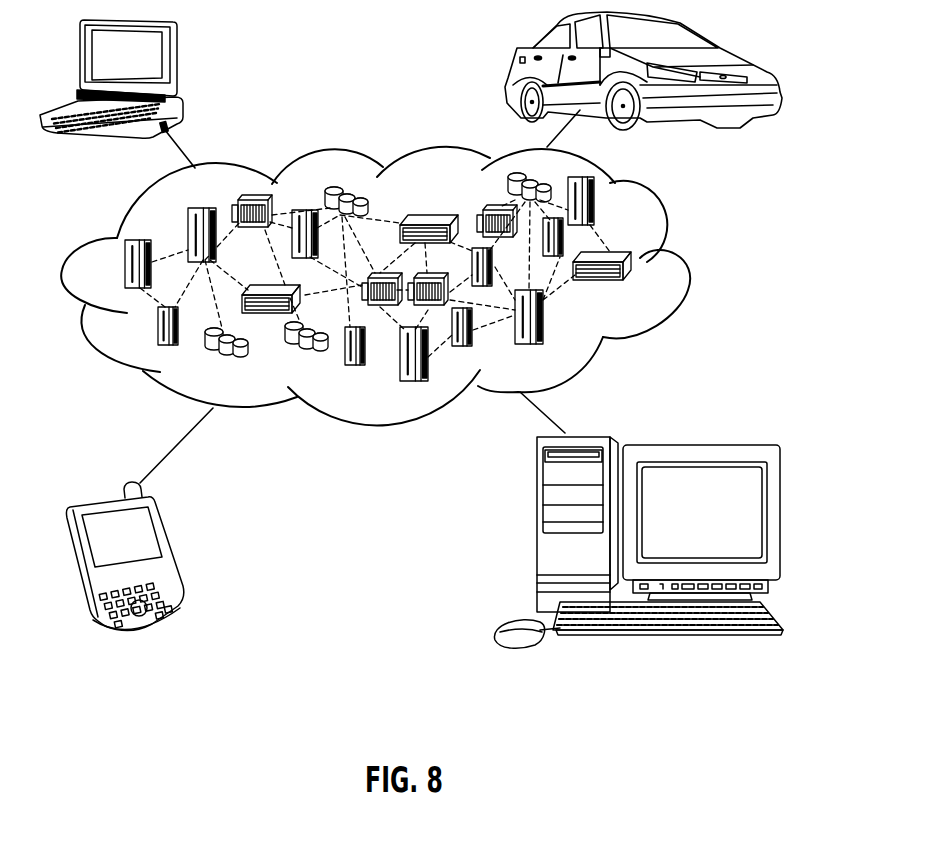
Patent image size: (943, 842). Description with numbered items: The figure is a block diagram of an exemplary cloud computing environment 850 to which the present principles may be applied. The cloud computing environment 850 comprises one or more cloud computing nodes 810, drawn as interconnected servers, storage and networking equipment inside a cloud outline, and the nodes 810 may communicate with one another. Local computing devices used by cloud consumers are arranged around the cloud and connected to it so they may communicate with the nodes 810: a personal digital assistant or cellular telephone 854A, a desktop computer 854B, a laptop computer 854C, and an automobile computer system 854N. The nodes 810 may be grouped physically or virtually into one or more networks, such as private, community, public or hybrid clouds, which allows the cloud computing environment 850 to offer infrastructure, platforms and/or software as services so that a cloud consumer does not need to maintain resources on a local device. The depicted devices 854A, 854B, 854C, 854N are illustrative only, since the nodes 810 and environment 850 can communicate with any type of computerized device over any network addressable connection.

The cloud computing nodes 810 is at (660, 287).
The cloud computing environment 850 is at (672, 232).
The personal digital assistant or cellular telephone 854A is at (168, 547).
The desktop computer 854B is at (535, 534).
The laptop computer 854C is at (177, 59).
The automobile computer system 854N is at (517, 62).